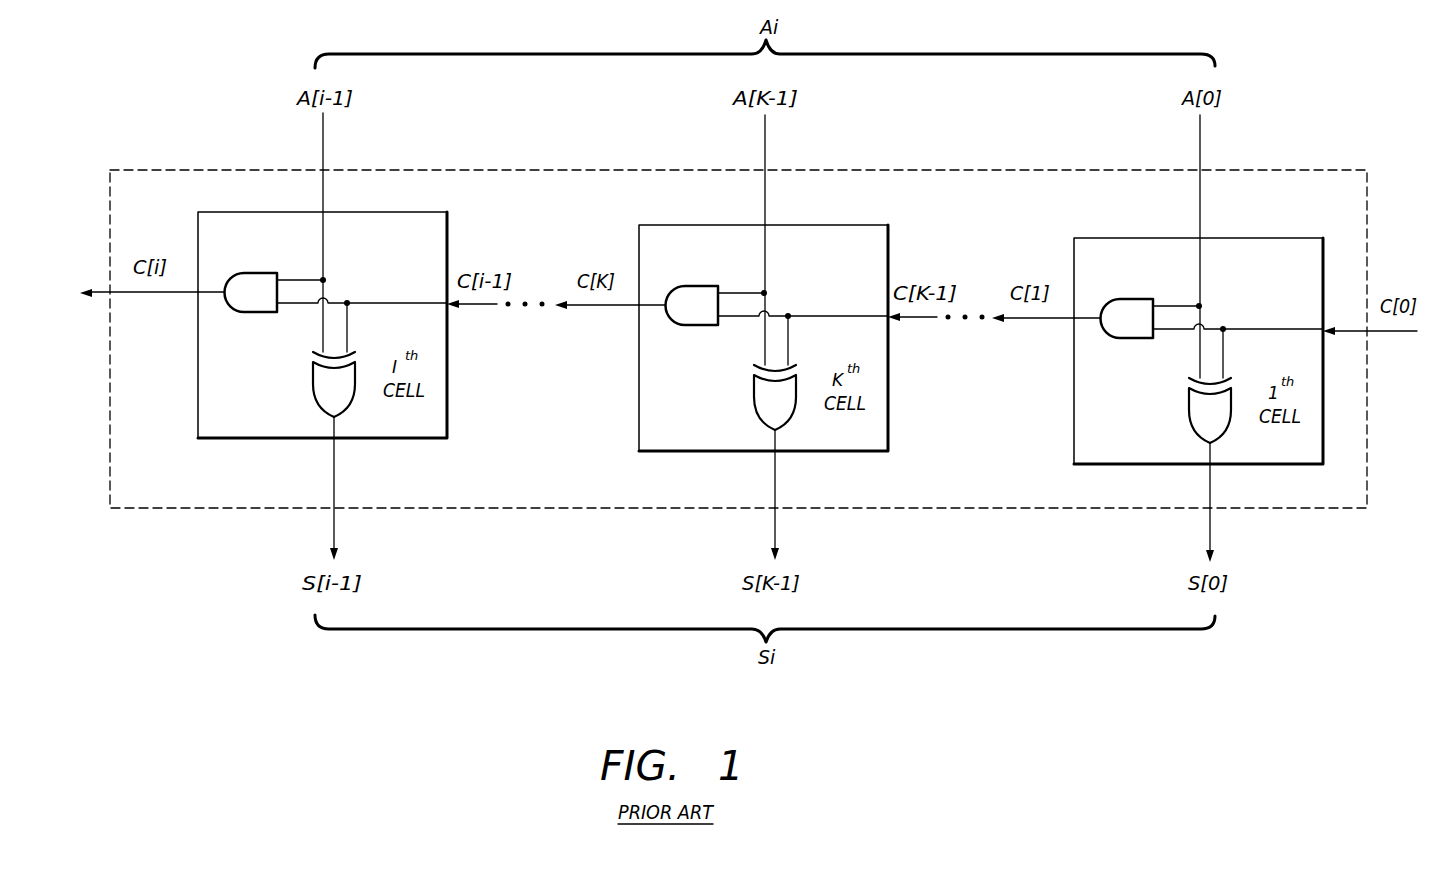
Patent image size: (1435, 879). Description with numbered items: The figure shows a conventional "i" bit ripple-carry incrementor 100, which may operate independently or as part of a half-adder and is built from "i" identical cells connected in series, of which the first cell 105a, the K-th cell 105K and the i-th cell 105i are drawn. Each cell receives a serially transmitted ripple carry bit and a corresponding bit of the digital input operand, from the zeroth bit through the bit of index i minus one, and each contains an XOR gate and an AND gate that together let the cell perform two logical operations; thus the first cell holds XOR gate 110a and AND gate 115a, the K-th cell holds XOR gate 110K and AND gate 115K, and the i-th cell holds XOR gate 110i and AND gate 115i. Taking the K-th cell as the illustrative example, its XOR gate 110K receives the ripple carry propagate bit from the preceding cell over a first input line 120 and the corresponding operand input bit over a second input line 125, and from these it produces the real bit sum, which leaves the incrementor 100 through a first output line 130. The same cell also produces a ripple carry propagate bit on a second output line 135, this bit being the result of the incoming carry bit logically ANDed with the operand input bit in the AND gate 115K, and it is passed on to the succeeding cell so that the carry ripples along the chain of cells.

The ripple-carry incrementor 100 is at (928, 534).
The cell 105i is at (447, 365).
The cell 105K is at (715, 346).
The cell 105a is at (1154, 351).
The XOR gate 110i is at (313, 386).
The XOR gate 110K is at (741, 397).
The XOR gate 110a is at (1177, 410).
The AND gate 115i is at (248, 272).
The AND gate 115K is at (694, 281).
The AND gate 115a is at (1129, 294).
The first input line 120 is at (915, 319).
The second input line 125 is at (766, 153).
The first output line 130 is at (774, 520).
The second output line 135 is at (607, 307).